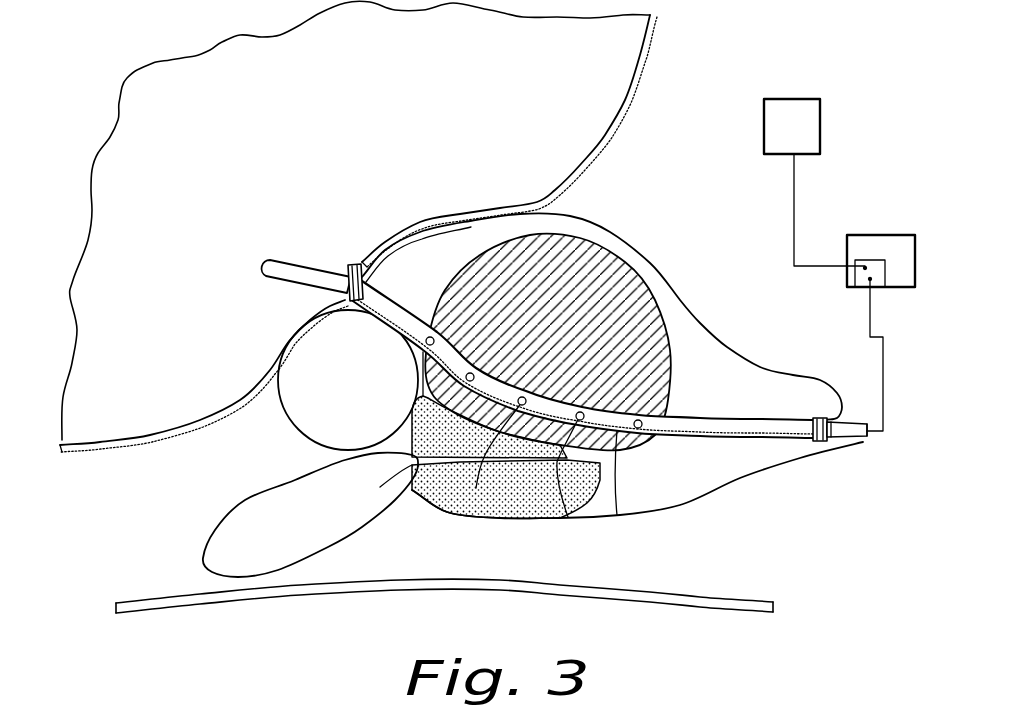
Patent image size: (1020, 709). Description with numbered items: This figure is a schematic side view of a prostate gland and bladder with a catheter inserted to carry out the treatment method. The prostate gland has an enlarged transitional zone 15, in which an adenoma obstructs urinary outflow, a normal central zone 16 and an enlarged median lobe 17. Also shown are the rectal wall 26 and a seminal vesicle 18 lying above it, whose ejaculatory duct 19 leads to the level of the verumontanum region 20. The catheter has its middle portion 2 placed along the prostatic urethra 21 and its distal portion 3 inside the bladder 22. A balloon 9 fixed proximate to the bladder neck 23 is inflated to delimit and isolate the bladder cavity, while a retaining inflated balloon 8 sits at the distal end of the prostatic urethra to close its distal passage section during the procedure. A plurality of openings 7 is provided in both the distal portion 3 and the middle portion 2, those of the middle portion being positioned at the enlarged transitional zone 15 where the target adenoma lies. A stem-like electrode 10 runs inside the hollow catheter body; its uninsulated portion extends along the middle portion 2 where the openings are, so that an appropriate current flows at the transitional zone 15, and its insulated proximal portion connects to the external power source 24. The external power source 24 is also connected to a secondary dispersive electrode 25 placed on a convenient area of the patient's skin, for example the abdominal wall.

The middle portion 2 is at (570, 518).
The distal portion 3 is at (314, 262).
The openings 7 is at (302, 287).
The retaining inflated balloon 8 is at (843, 440).
The balloon 9 is at (348, 308).
The stem-like electrode 10 is at (795, 432).
The enlarged transitional zone 15 is at (603, 313).
The normal central zone 16 is at (523, 503).
The enlarged median lobe 17 is at (302, 405).
The seminal vesicle 18 is at (228, 554).
The ejaculatory duct 19 is at (418, 497).
The verumontanum region 20 is at (622, 511).
The prostatic urethra 21 is at (742, 435).
The bladder 22 is at (528, 127).
The bladder neck 23 is at (357, 265).
The external power source 24 is at (878, 246).
The secondary dispersive electrode 25 is at (777, 122).
The rectal wall 26 is at (350, 592).